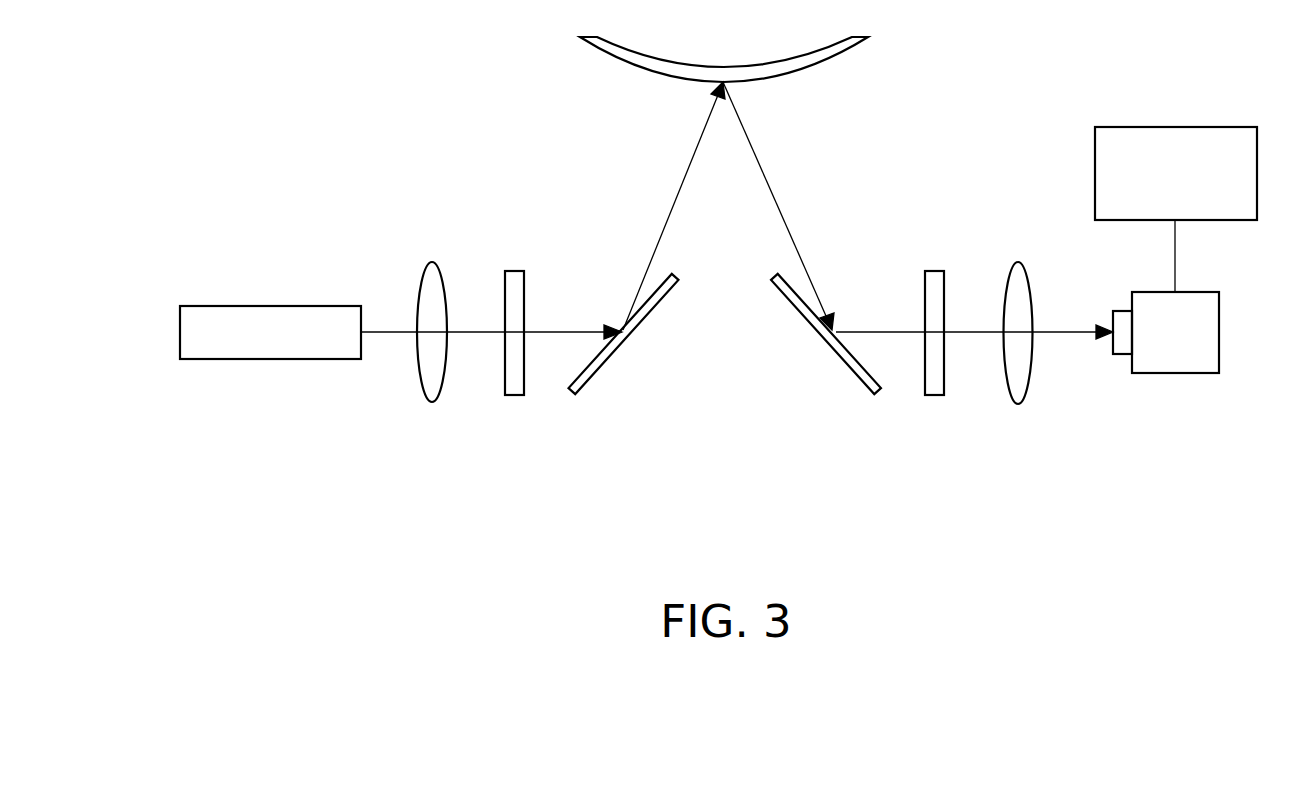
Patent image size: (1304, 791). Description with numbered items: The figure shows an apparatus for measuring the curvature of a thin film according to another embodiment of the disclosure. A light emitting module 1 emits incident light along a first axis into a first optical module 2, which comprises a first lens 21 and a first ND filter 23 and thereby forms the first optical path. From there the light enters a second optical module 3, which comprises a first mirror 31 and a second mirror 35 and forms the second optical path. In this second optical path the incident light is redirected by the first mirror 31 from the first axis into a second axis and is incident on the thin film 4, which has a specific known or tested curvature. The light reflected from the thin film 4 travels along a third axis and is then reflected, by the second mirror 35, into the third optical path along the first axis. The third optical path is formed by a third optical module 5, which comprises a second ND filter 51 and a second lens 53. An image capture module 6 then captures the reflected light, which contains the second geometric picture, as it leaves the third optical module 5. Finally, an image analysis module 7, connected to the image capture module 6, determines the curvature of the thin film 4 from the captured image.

The light emitting module 1 is at (240, 306).
The first optical module 2 is at (473, 385).
The first lens 21 is at (432, 393).
The first ND filter 23 is at (510, 367).
The second optical module 3 is at (725, 391).
The first mirror 31 is at (600, 365).
The second mirror 35 is at (826, 369).
The thin film 4 is at (808, 75).
The third optical module 5 is at (977, 385).
The second ND filter 51 is at (933, 395).
The second lens 53 is at (1014, 363).
The image capture module 6 is at (1220, 332).
The image analysis module 7 is at (1175, 126).